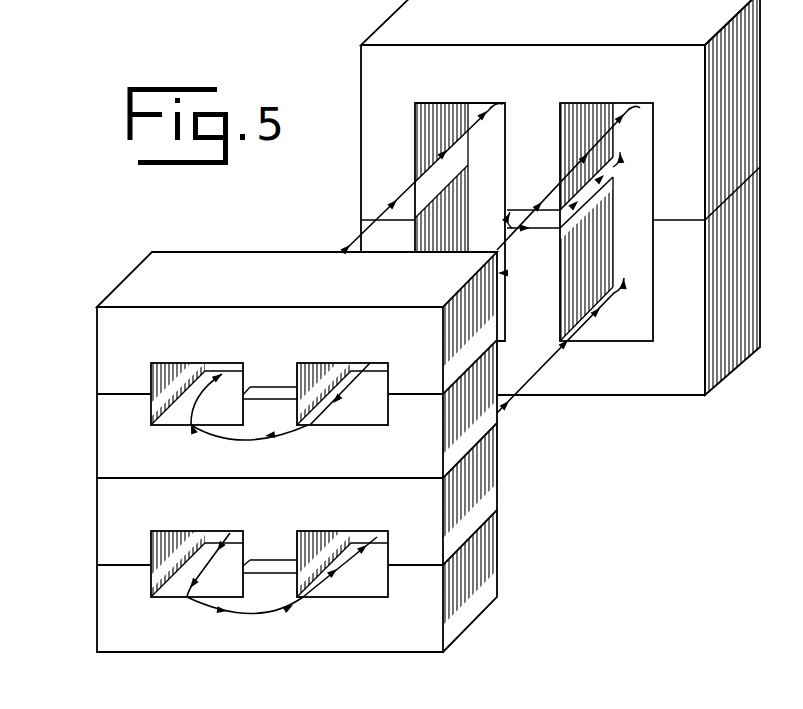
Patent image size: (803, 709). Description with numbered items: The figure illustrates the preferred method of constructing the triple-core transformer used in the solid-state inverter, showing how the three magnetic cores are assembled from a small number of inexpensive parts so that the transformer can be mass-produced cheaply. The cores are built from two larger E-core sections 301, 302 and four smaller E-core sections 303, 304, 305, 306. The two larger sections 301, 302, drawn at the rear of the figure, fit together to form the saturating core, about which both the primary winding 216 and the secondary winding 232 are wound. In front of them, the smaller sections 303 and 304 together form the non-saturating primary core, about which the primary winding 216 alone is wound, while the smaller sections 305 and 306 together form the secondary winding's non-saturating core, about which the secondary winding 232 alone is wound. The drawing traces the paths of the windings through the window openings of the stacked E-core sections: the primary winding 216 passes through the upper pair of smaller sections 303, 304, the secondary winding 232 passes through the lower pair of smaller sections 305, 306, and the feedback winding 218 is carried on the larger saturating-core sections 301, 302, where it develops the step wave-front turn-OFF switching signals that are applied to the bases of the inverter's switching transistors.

The larger E-core section 301 is at (352, 92).
The larger E-core section 302 is at (351, 225).
The smaller E-core section 303 is at (86, 362).
The smaller E-core section 304 is at (86, 455).
The smaller E-core section 305 is at (86, 527).
The smaller E-core section 306 is at (86, 622).
The primary winding 216 is at (237, 439).
The feedback winding 218 is at (540, 231).
The secondary winding 232 is at (272, 614).